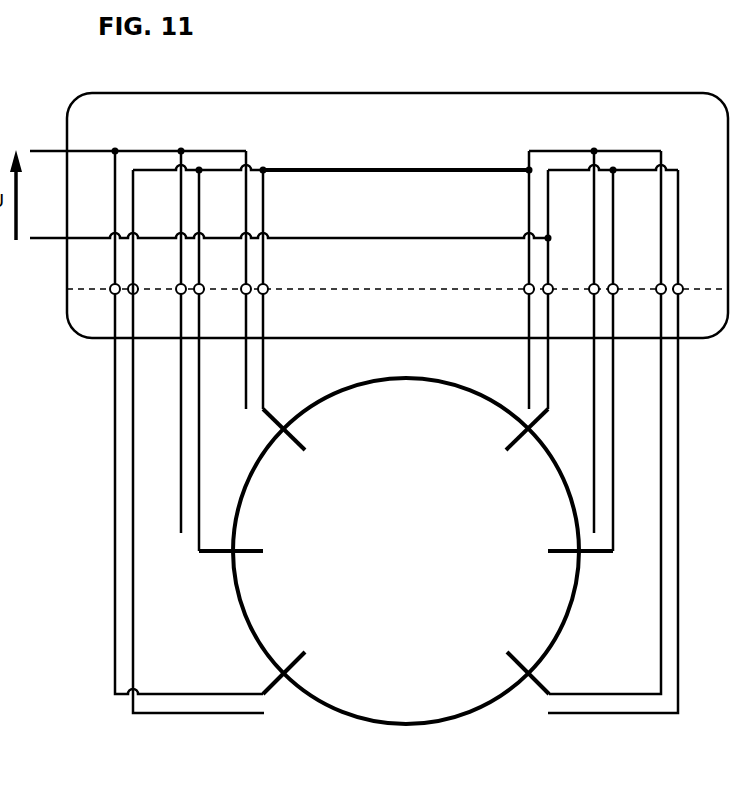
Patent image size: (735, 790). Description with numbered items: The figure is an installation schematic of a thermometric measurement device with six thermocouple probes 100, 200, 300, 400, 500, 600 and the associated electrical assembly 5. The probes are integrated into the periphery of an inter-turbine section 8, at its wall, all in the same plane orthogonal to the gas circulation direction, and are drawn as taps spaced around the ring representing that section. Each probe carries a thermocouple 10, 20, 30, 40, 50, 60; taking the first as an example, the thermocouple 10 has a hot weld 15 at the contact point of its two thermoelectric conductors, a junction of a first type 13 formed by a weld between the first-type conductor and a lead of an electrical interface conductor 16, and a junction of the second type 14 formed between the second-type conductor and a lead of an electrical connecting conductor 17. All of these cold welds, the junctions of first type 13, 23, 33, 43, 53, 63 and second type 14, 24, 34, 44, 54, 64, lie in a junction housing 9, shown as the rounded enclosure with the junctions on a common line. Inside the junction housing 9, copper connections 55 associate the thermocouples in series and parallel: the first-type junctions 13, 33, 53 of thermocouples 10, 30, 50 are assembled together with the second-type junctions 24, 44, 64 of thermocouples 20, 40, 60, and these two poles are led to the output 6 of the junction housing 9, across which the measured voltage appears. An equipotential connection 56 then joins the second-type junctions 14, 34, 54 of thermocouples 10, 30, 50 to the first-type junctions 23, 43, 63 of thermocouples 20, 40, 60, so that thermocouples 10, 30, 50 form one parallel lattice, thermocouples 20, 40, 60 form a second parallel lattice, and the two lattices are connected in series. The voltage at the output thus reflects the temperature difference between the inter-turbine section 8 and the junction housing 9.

The switching unit 5 is at (446, 131).
The supply lines 6 is at (289, 194).
The inter-turbine section 8 is at (406, 551).
The junction housing 9 is at (398, 138).
The thermocouple 10 is at (312, 451).
The junction of a first type 13 is at (242, 285).
The junction of the second type 14 is at (267, 293).
The hot weld 15 is at (308, 447).
The electrical interface conductor 16 is at (249, 248).
The electrical connecting conductor 17 is at (266, 272).
The thermocouple 20 is at (507, 453).
The junction of the first type 23 is at (525, 293).
The junction of the second type 24 is at (551, 285).
The thermocouple 30 is at (253, 573).
The junction of the first type 33 is at (177, 285).
The junction of the second type 34 is at (203, 293).
The thermocouple 40 is at (559, 573).
The junction of the first type 43 is at (590, 293).
The junction of the second type 44 is at (617, 285).
The thermocouple 50 is at (308, 662).
The junction of the first type 53 is at (111, 285).
The junction of the second type 54 is at (623, 150).
The copper connections 55 is at (237, 150).
The equipotential connection 56 is at (322, 168).
The thermocouple 60 is at (503, 662).
The junction of the first type 63 is at (657, 293).
The junction of the second type 64 is at (683, 285).
The thermocouple probe 100 is at (303, 441).
The thermocouple probe 200 is at (529, 478).
The thermocouple probe 300 is at (250, 556).
The thermocouple probe 400 is at (563, 556).
The thermocouple probe 500 is at (294, 669).
The thermocouple probe 600 is at (517, 669).